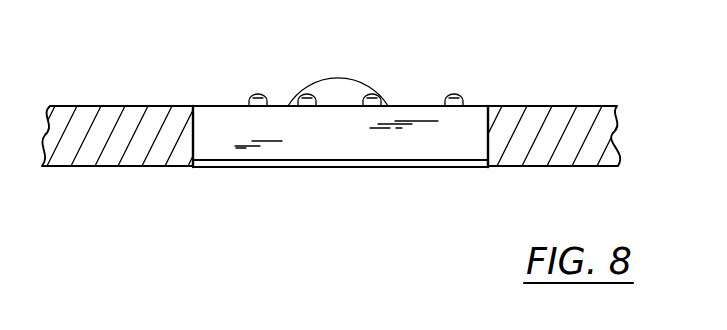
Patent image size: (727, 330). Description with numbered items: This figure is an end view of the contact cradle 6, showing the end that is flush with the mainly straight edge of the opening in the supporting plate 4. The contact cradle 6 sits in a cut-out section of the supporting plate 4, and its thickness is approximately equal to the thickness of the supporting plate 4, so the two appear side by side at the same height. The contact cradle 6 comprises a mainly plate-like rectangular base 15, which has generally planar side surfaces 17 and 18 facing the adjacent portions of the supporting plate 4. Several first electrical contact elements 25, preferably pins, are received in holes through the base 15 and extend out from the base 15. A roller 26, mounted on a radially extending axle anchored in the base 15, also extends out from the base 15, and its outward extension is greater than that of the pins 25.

The supporting plate 4 is at (562, 110).
The contact cradle 6 is at (283, 149).
The base 15 is at (218, 149).
The side surface 17 is at (491, 129).
The side surface 18 is at (192, 128).
The first electrical contact element 25 is at (456, 97).
The roller 26 is at (362, 84).